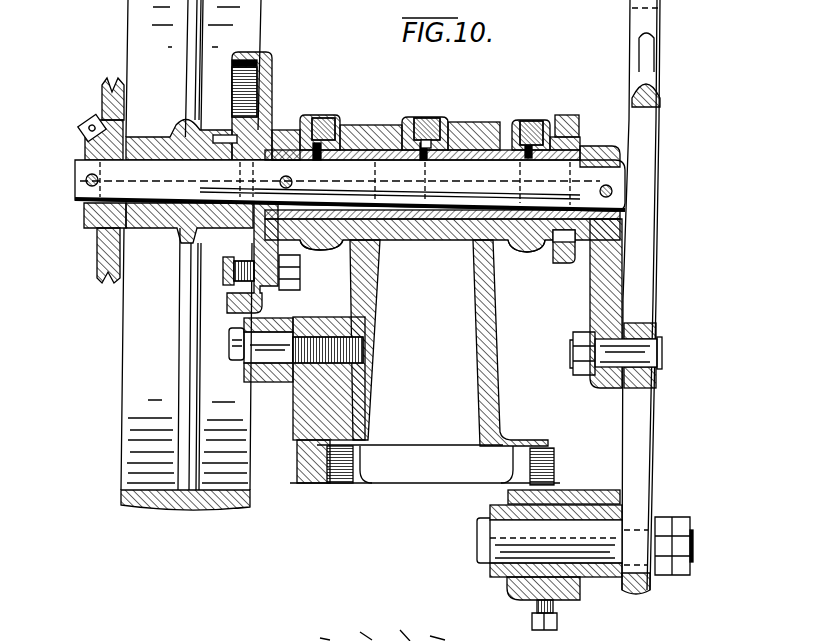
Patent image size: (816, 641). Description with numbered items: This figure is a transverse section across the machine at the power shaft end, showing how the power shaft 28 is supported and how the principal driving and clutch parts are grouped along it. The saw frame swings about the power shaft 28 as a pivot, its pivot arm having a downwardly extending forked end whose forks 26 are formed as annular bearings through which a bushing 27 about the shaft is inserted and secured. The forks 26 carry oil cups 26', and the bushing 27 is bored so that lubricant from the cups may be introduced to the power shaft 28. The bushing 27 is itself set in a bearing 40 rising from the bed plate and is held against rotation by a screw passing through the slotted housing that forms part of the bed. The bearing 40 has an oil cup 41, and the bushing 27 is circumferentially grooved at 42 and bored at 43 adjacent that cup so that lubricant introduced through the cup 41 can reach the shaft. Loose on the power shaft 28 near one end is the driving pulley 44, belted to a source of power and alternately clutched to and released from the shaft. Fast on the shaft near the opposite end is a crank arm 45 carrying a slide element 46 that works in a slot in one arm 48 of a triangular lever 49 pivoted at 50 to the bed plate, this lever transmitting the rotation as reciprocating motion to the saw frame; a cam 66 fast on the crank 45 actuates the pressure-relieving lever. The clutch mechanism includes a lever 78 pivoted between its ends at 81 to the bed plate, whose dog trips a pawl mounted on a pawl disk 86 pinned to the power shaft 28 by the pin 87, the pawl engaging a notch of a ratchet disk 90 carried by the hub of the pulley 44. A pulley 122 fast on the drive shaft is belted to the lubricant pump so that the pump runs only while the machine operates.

The forked end 26 is at (437, 257).
The oil cup 26' is at (328, 117).
The bushing 27 is at (357, 137).
The power shaft 28 is at (493, 170).
The bearing 40 is at (497, 306).
The oil cup 41 is at (428, 120).
The circumferential groove 42 is at (402, 150).
The bore 43 is at (425, 160).
The pulley 44 is at (203, 510).
The crank arm 45 is at (598, 300).
The slide element 46 is at (650, 360).
The arm of triangular lever 48 is at (657, 331).
The triangular lever 49 is at (650, 506).
The pivot 50 is at (476, 538).
The cam 66 is at (564, 115).
The pivoted lever 78 is at (270, 385).
The pivot 81 is at (236, 347).
The pawl disk 86 is at (273, 68).
The pin 87 is at (293, 183).
The ratchet disk 90 is at (236, 132).
The pulley 122 is at (97, 272).